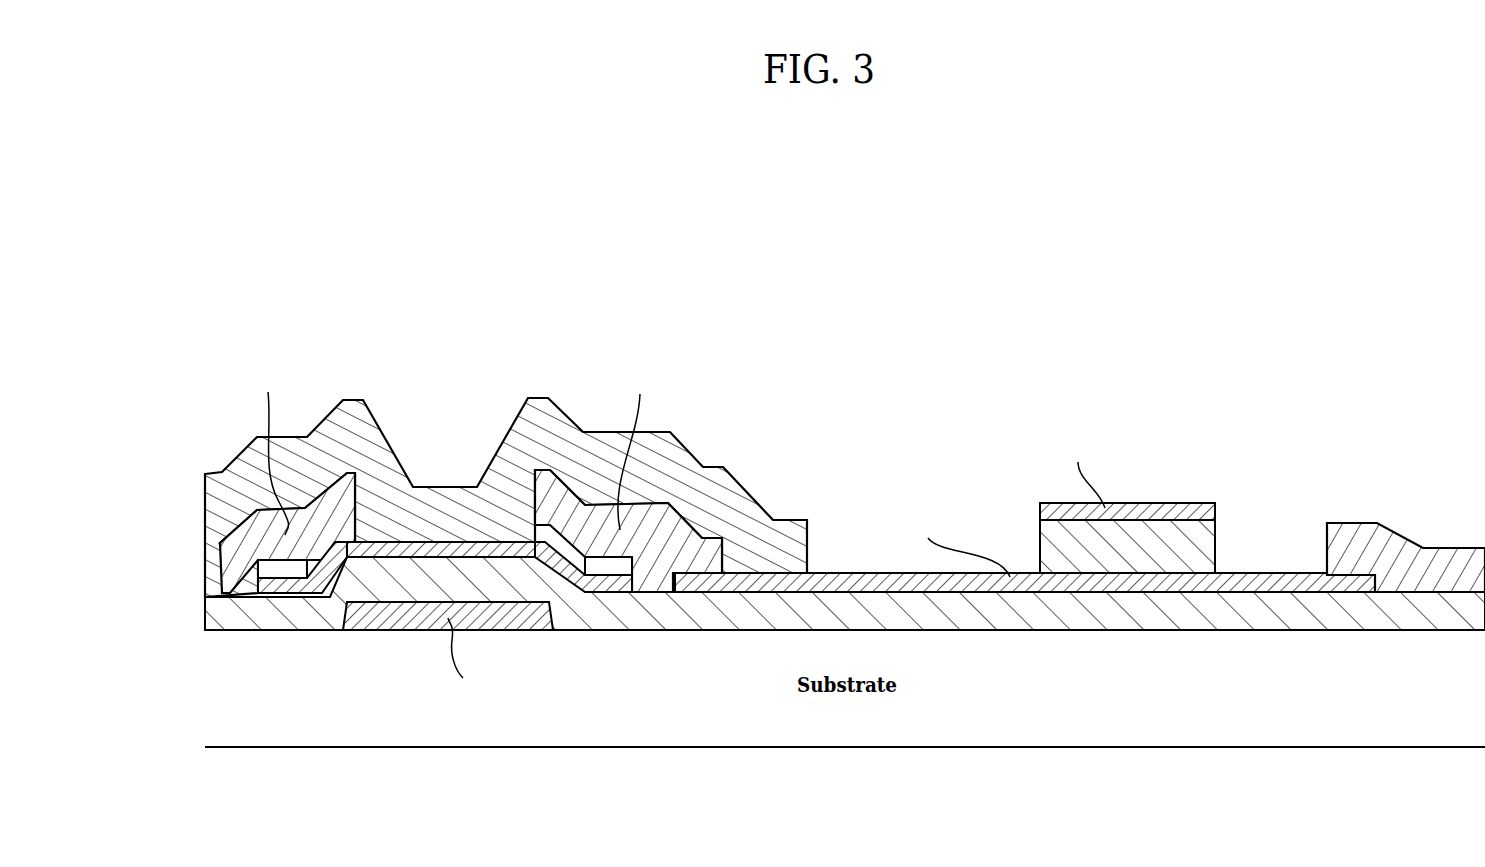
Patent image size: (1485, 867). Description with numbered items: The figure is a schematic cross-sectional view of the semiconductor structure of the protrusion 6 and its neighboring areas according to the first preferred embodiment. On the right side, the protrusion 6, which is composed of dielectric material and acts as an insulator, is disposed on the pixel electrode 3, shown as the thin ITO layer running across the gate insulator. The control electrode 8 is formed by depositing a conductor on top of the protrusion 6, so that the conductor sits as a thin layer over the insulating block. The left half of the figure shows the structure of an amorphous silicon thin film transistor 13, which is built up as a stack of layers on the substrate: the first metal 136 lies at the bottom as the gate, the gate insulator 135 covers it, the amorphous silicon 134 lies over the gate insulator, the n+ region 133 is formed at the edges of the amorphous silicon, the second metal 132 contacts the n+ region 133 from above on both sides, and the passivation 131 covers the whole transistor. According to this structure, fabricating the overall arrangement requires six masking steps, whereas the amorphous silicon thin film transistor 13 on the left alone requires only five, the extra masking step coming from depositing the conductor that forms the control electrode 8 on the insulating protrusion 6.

The amorphous silicon thin film transistor 13 is at (451, 410).
The passivation 131 is at (212, 500).
The second metal 132 is at (215, 550).
The n+ region 133 is at (255, 568).
The amorphous silicon 134 is at (215, 597).
The gate insulator 135 is at (215, 622).
The first metal 136 is at (376, 626).
The pixel electrode 3 is at (1275, 578).
The protrusion 6 is at (1218, 548).
The control electrode 8 is at (1218, 512).